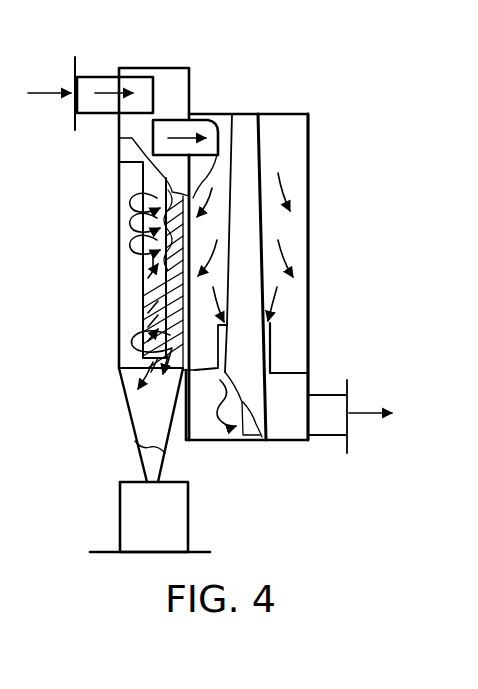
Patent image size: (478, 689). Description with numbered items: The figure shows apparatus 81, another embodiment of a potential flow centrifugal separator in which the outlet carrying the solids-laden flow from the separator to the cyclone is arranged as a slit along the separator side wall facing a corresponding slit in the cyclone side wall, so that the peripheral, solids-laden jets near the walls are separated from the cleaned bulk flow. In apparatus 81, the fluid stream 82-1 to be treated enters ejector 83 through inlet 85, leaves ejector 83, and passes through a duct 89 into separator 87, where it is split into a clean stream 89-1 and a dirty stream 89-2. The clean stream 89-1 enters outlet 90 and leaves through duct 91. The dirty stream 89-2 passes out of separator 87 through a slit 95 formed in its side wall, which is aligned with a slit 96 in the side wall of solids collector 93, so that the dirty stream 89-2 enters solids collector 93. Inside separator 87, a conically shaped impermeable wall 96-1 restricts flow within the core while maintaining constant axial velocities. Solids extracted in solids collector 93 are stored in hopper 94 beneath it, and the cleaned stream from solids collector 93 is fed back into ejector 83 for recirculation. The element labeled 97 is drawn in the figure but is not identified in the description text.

The apparatus 81 is at (251, 460).
The fluid stream 82-1 is at (57, 94).
The ejector 83 is at (167, 75).
The inlet 85 is at (89, 76).
The separator 87 is at (302, 260).
The duct 89 is at (191, 119).
The clean stream 89-1 is at (271, 320).
The dirty stream 89-2 is at (191, 243).
The outlet 90 is at (274, 358).
The duct 91 is at (322, 437).
The solids collector 93 is at (133, 399).
The hopper 94 is at (130, 503).
The slit 95 is at (148, 277).
The slit 96 is at (148, 277).
The conically shaped impermeable wall 96-1 is at (252, 237).
The inner wall 97 is at (148, 312).